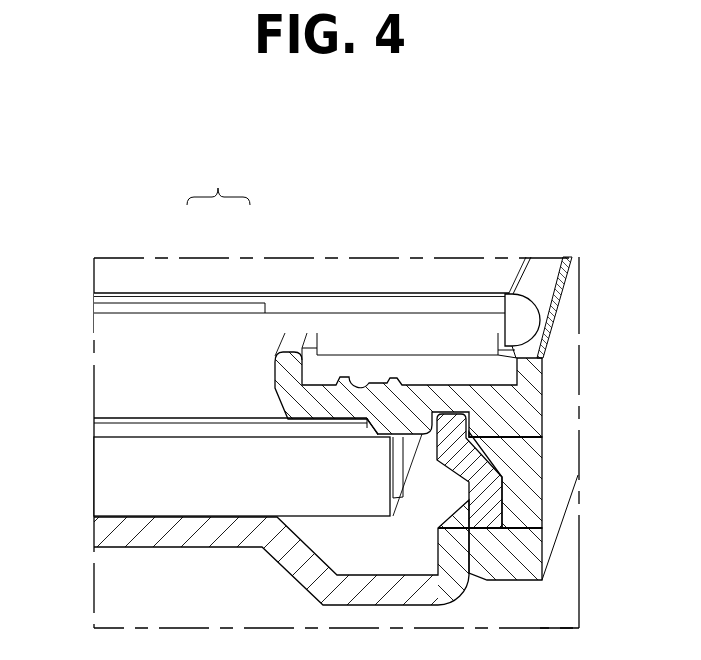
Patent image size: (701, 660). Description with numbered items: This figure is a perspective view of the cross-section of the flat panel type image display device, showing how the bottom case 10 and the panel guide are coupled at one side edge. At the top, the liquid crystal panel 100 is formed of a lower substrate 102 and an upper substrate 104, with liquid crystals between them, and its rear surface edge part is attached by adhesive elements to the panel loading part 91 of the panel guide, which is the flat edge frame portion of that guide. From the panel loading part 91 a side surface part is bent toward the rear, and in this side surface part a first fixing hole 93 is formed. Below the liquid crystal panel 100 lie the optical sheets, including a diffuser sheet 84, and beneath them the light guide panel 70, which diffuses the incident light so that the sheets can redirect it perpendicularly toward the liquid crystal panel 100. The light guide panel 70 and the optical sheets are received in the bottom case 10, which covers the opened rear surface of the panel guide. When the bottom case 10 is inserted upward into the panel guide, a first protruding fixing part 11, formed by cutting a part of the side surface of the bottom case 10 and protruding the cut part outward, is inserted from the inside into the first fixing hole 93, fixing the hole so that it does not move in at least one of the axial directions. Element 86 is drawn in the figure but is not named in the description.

The liquid crystal panel 100 is at (301, 249).
The lower substrate 102 is at (234, 322).
The upper substrate 104 is at (182, 311).
The middle frame 86 is at (103, 374).
The diffuser sheet 84 is at (102, 430).
The light guide panel 70 is at (103, 483).
The panel loading part 91 is at (523, 405).
The first fixing hole 93 is at (520, 462).
The first protruding fixing part 11 is at (483, 508).
The bottom case 10 is at (445, 595).